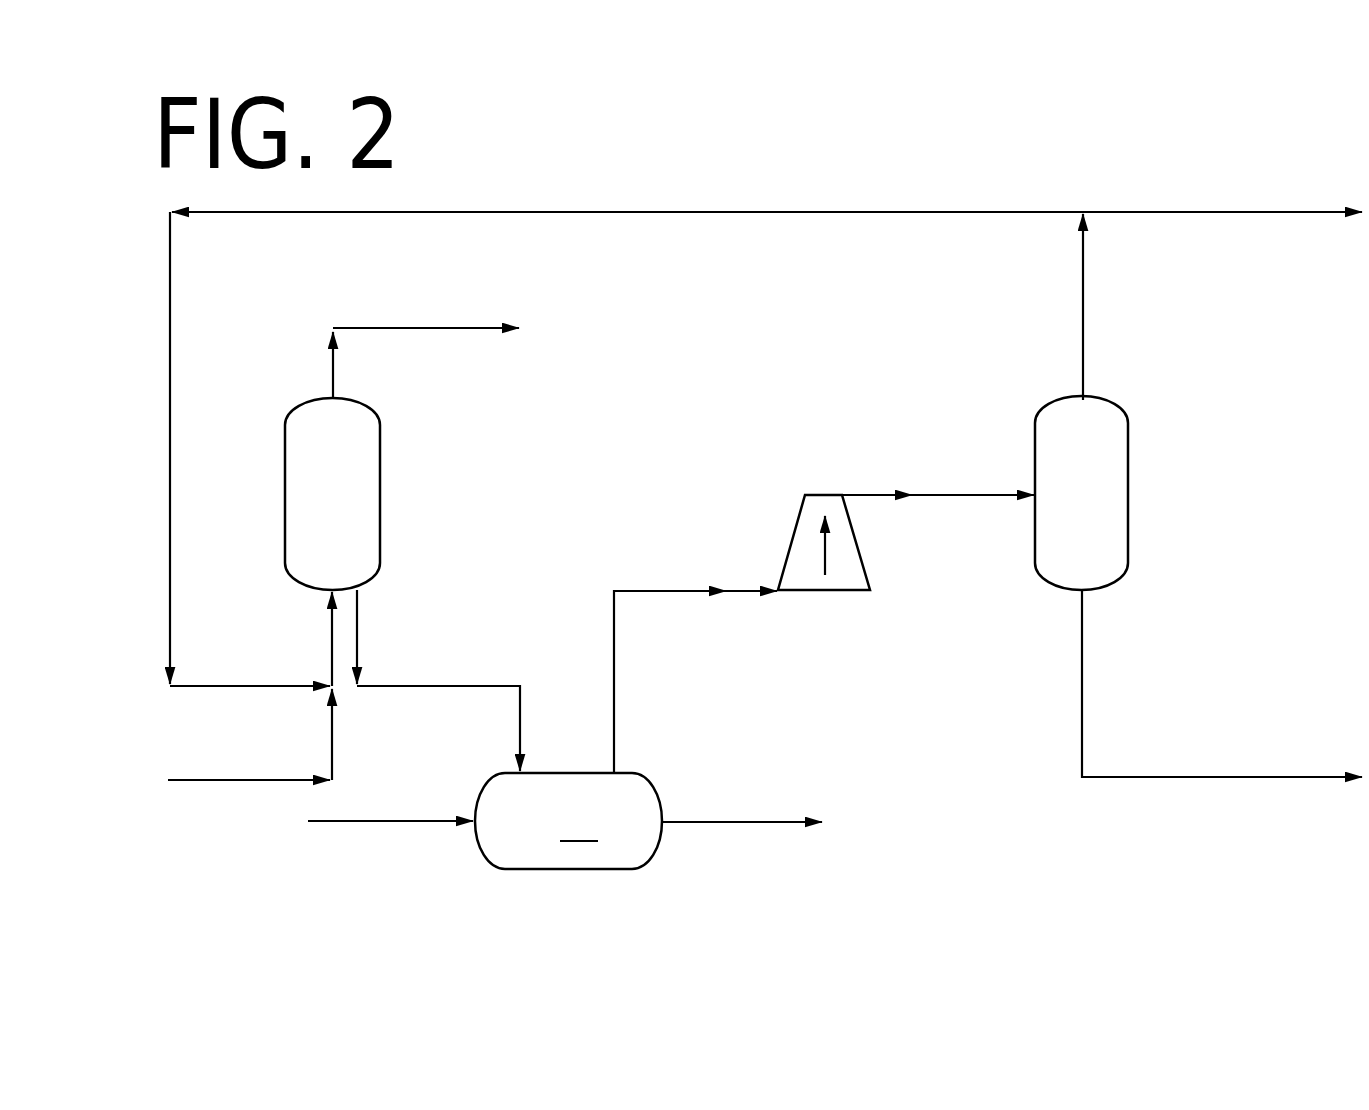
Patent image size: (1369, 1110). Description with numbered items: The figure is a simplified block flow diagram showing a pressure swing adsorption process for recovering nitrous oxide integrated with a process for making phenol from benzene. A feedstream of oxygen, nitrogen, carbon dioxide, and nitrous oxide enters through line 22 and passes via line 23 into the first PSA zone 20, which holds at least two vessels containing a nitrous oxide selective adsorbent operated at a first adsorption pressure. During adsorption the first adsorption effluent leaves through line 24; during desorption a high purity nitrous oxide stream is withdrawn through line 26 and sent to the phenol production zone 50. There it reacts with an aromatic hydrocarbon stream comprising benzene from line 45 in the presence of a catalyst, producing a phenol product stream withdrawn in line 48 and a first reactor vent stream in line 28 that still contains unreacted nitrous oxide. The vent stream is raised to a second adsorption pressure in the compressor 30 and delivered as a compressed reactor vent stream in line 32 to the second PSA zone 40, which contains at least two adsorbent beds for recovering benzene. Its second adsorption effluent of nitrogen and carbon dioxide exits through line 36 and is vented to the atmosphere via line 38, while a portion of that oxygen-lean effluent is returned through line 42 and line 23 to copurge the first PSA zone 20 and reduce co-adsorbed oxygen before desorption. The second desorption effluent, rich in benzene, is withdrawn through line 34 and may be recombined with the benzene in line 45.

The first PSA zone 20 is at (381, 490).
The feedstream line 22 is at (250, 779).
The line 23 is at (331, 637).
The first adsorption effluent line 24 is at (408, 327).
The first desorption effluent line 26 is at (440, 684).
The first reactor vent stream line 28 is at (620, 590).
The compressor 30 is at (857, 545).
The compressed reactor vent stream line 32 is at (975, 493).
The second desorption effluent line 34 is at (1084, 648).
The second adsorption effluent line 36 is at (1085, 277).
The vent line 38 is at (1178, 212).
The second PSA zone 40 is at (1130, 462).
The oxygen-lean copurge line 42 is at (169, 466).
The aromatic hydrocarbon stream line 45 is at (415, 823).
The first product stream line 48 is at (710, 821).
The phenol production zone 50 is at (568, 821).